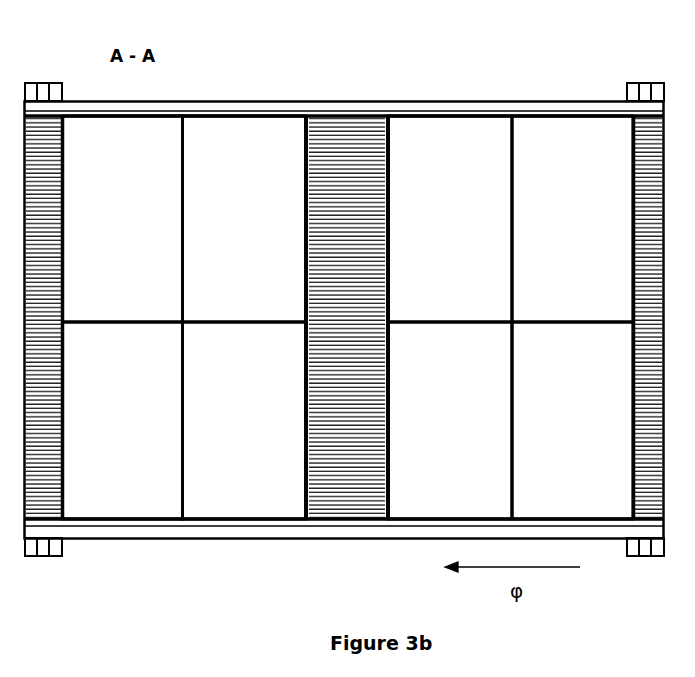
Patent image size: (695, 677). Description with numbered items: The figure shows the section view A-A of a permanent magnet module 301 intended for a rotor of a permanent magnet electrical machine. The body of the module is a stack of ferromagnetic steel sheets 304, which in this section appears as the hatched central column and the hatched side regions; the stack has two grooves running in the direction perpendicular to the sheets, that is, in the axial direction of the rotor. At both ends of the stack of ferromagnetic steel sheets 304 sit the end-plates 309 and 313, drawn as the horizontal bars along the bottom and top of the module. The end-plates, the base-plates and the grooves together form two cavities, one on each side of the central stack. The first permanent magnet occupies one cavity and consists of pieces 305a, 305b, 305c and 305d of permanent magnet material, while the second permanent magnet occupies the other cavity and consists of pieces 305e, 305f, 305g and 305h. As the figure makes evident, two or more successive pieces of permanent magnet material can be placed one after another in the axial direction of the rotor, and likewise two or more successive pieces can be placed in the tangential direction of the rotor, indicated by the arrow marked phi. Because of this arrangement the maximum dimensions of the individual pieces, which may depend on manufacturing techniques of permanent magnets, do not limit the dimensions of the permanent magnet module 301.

The permanent magnet module 301 is at (274, 86).
The end-plate 313 is at (406, 101).
The end-plate 309 is at (122, 540).
The stack of ferromagnetic steel sheets 304 is at (347, 318).
The piece of permanent magnet material 305a is at (123, 219).
The piece of permanent magnet material 305b is at (244, 219).
The piece of permanent magnet material 305c is at (123, 420).
The piece of permanent magnet material 305d is at (244, 420).
The piece of permanent magnet material 305e is at (450, 219).
The piece of permanent magnet material 305f is at (572, 219).
The piece of permanent magnet material 305g is at (450, 420).
The piece of permanent magnet material 305h is at (572, 420).